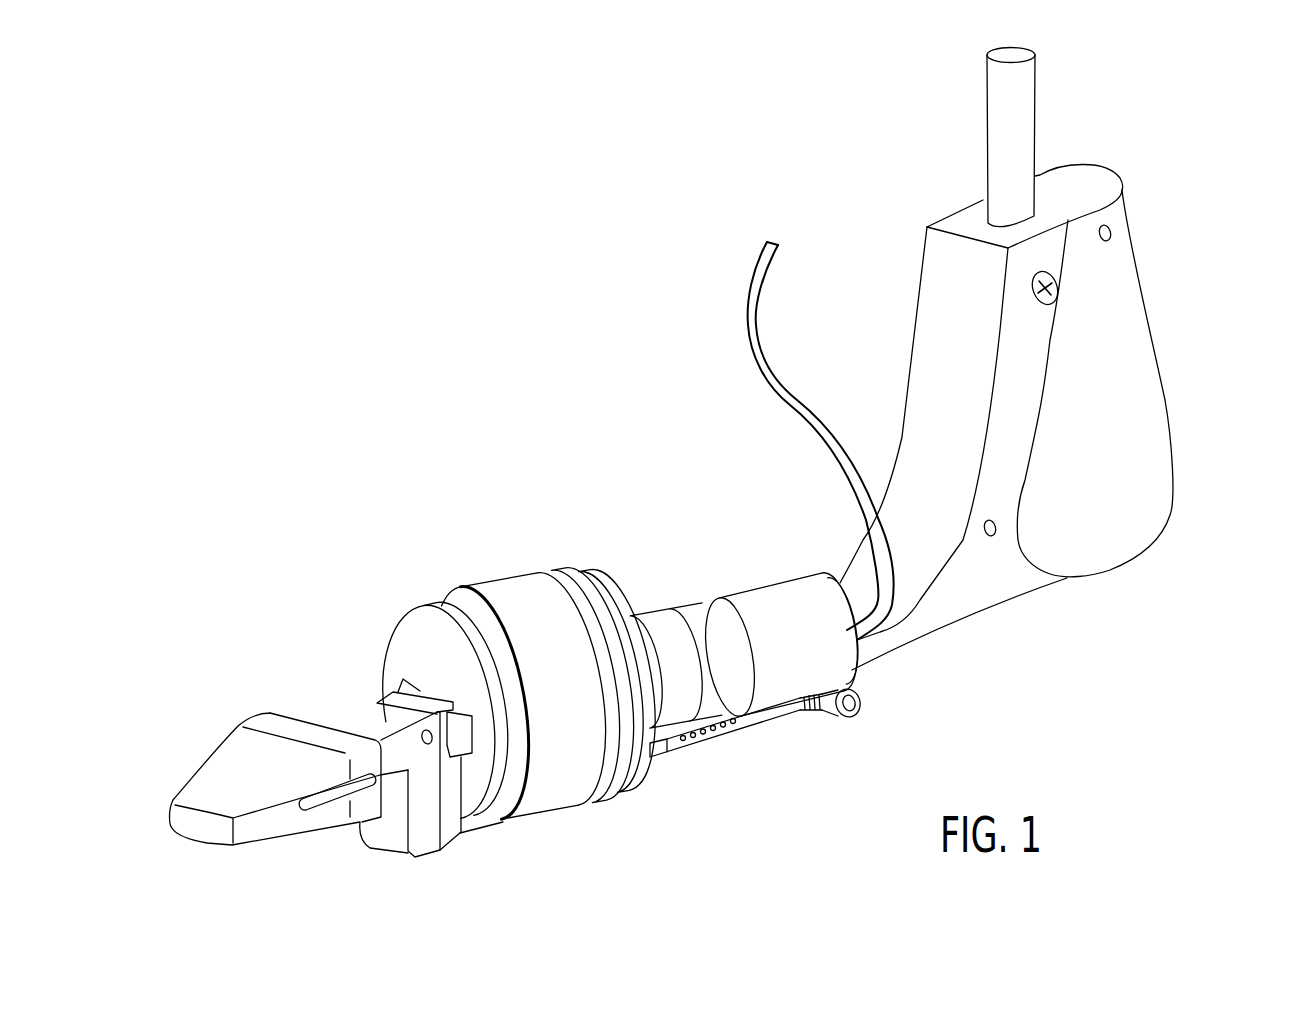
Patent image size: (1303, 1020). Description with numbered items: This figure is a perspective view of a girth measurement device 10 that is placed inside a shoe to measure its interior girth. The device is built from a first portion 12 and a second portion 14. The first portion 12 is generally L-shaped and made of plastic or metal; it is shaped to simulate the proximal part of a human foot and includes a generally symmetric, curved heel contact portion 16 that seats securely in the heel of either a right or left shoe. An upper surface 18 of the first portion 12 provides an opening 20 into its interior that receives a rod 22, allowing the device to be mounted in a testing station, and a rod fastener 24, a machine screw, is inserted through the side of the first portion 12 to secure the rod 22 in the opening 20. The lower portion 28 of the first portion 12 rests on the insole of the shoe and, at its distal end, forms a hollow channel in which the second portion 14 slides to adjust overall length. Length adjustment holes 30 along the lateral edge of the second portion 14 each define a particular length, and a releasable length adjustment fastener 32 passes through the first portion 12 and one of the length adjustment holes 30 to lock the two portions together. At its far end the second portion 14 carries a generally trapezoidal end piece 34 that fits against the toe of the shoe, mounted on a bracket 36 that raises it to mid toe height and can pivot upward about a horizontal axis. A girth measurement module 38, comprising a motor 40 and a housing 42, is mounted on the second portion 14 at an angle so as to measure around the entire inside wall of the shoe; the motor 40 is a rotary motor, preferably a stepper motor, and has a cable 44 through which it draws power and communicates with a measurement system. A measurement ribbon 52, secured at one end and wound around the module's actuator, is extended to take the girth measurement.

The girth measurement device 10 is at (472, 289).
The first portion 12 is at (1200, 492).
The second portion 14 is at (160, 786).
The heel contact portion 16 is at (1160, 437).
The upper surface 18 is at (1090, 178).
The opening 20 is at (980, 222).
The rod 22 is at (1002, 123).
The rod fastener 24 is at (1050, 302).
The lower portion 28 is at (887, 647).
The length adjustment holes 30 is at (733, 720).
The length adjustment fastener 32 is at (832, 713).
The end piece 34 is at (215, 790).
The bracket 36 is at (423, 800).
The girth measurement module 38 is at (669, 588).
The motor 40 is at (748, 593).
The housing 42 is at (577, 597).
The cable 44 is at (750, 317).
The measurement ribbon 52 is at (503, 588).